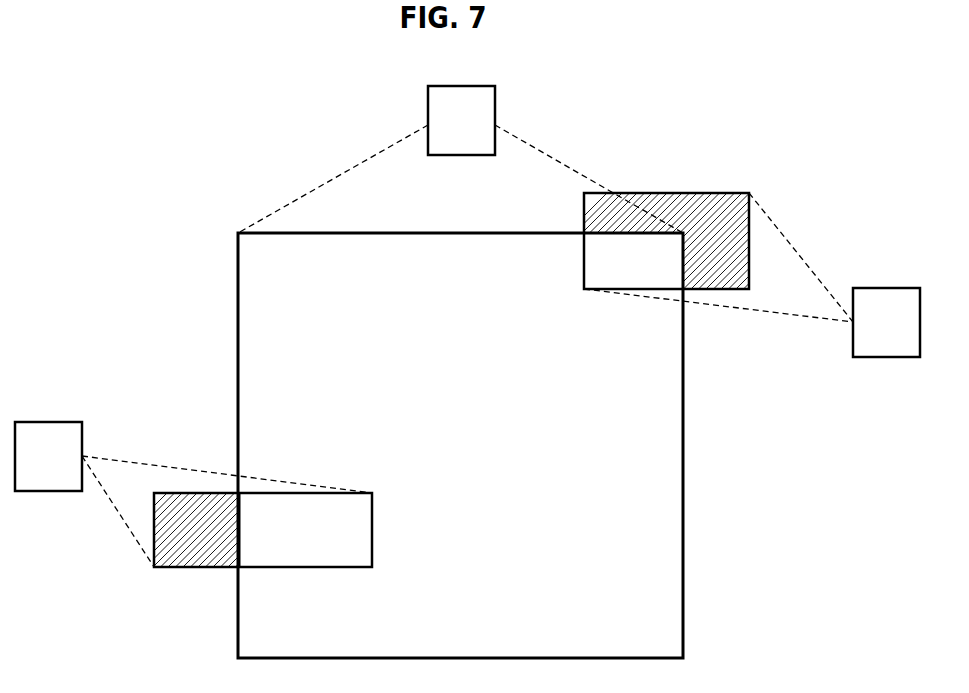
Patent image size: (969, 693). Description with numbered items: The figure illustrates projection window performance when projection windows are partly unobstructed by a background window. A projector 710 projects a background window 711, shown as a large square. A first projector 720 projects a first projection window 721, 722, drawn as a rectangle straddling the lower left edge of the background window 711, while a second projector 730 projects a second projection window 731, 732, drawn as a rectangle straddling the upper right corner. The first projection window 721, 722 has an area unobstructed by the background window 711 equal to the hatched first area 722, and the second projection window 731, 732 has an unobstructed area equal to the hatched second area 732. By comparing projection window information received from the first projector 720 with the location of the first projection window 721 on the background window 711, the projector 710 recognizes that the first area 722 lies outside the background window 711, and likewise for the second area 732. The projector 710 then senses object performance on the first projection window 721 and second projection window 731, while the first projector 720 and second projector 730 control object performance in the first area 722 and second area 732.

The projector 710 is at (460, 159).
The background window 711 is at (460, 445).
The first projector 720 is at (193, 494).
The first projection window 721 is at (263, 530).
The first area 722 is at (209, 530).
The second projector 730 is at (752, 275).
The second projection window 731 is at (633, 261).
The second area 732 is at (684, 240).